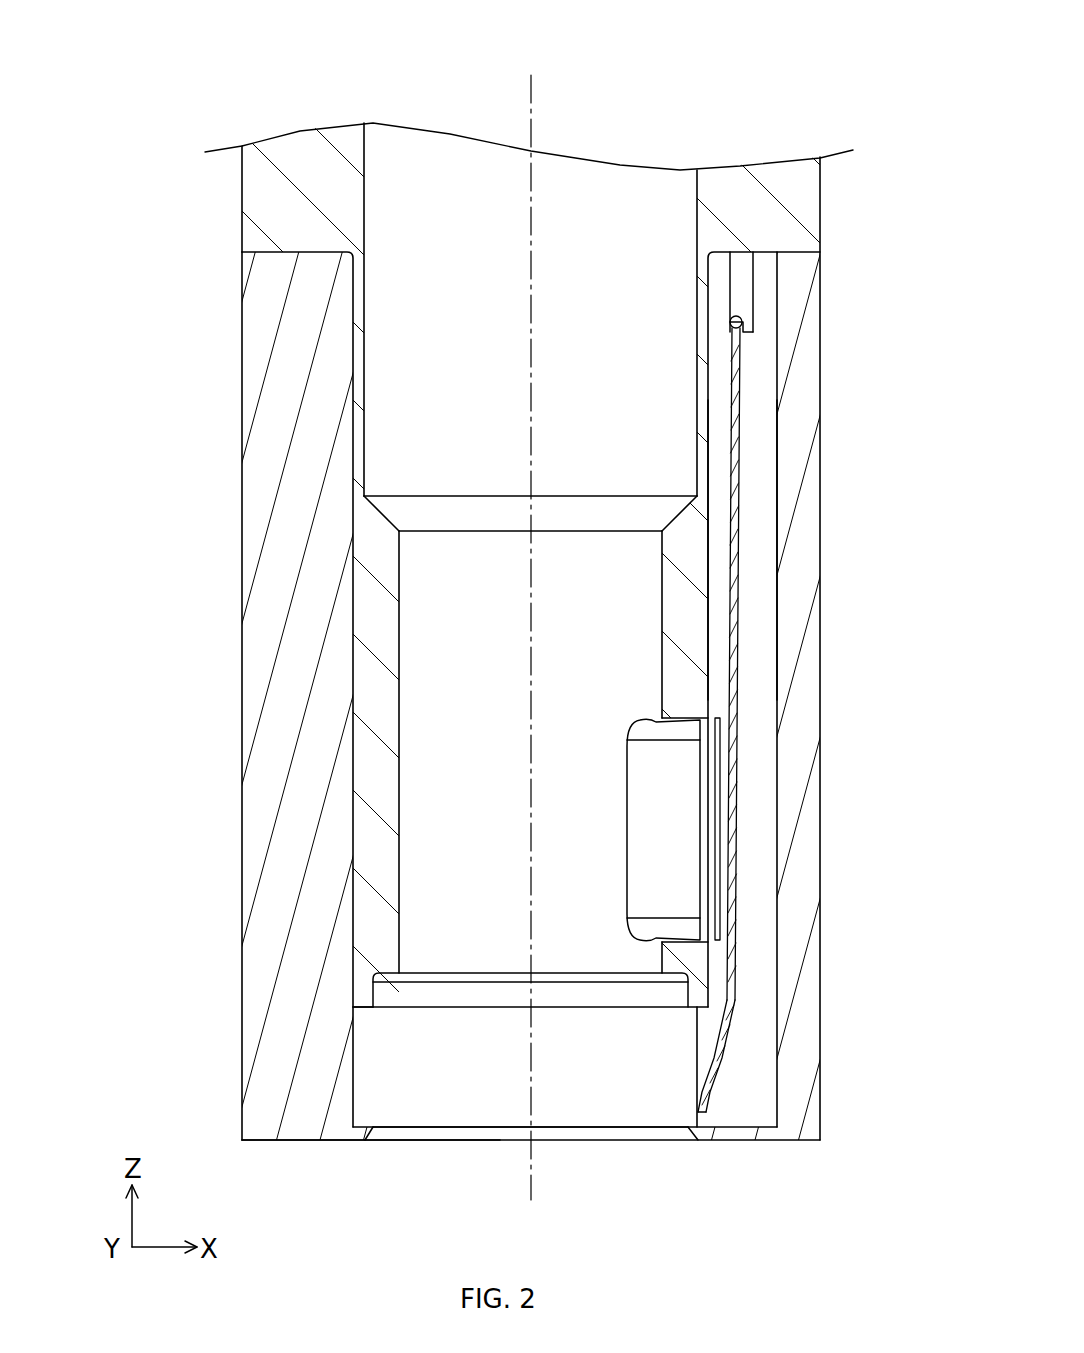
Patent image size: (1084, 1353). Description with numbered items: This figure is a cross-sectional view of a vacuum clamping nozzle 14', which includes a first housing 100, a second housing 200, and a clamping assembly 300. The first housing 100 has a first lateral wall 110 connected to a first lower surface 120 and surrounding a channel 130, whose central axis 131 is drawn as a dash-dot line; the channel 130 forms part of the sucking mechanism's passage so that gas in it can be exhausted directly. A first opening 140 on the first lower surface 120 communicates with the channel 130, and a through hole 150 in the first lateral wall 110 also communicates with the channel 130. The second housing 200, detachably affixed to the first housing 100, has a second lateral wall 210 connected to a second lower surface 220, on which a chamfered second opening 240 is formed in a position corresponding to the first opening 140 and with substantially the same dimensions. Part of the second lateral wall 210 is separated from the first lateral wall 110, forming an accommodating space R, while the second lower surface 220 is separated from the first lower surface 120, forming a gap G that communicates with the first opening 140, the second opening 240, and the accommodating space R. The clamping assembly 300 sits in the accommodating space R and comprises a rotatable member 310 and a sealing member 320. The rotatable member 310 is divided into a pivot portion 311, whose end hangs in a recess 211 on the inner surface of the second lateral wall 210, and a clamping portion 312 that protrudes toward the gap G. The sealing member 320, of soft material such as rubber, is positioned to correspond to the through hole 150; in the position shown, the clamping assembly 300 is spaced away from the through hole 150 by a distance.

The vacuum clamping nozzle 14' is at (181, 14).
The first housing 100 is at (542, 650).
The first lateral wall 110 is at (690, 605).
The first lower surface 120 is at (363, 1010).
The channel 130 is at (594, 690).
The central axis 131 is at (531, 85).
The first opening 140 is at (678, 992).
The through hole 150 is at (683, 826).
The second housing 200 is at (242, 697).
The second lateral wall 210 is at (790, 456).
The recess 211 is at (745, 290).
The second lower surface 220 is at (345, 1142).
The second opening 240 is at (597, 1130).
The clamping assembly 300 is at (790, 758).
The rotatable member 310 is at (352, 4).
The pivot portion 311 is at (735, 388).
The clamping portion 312 is at (703, 1116).
The sealing member 320 is at (722, 880).
The accommodating space R is at (755, 541).
The gap G is at (370, 1085).